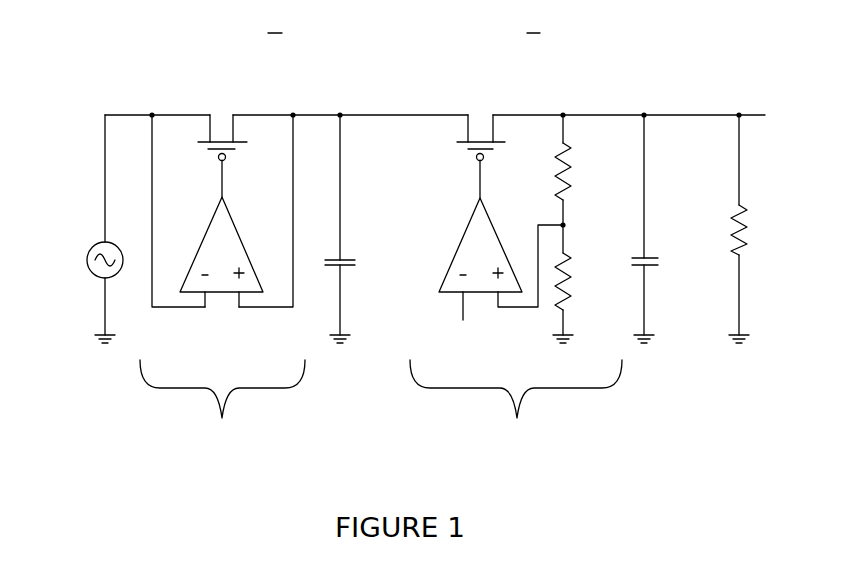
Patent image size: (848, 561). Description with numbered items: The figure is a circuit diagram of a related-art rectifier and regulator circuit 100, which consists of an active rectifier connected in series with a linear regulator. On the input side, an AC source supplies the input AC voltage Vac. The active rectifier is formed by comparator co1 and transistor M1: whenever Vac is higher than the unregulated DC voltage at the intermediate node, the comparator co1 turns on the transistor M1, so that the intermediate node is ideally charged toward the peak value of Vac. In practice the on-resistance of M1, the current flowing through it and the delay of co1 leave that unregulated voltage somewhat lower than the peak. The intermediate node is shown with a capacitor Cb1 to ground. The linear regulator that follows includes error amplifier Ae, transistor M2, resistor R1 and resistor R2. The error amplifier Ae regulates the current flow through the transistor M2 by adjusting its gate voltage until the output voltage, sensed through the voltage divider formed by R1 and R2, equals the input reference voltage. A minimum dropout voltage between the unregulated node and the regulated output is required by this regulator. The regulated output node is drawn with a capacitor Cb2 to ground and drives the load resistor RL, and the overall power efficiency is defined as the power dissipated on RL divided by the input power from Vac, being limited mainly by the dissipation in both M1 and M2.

The rectifier and regulator circuit 100 is at (98, 400).
The input AC voltage Vac is at (75, 229).
The transistor M1 is at (222, 121).
The comparator co1 is at (222, 211).
The buffer capacitor Cb1 is at (360, 229).
The transistor M2 is at (481, 121).
The error amplifier Ae is at (501, 241).
The resistor R1 is at (578, 170).
The resistor R2 is at (577, 284).
The output capacitor Cb2 is at (665, 229).
The load resistor RL is at (724, 229).